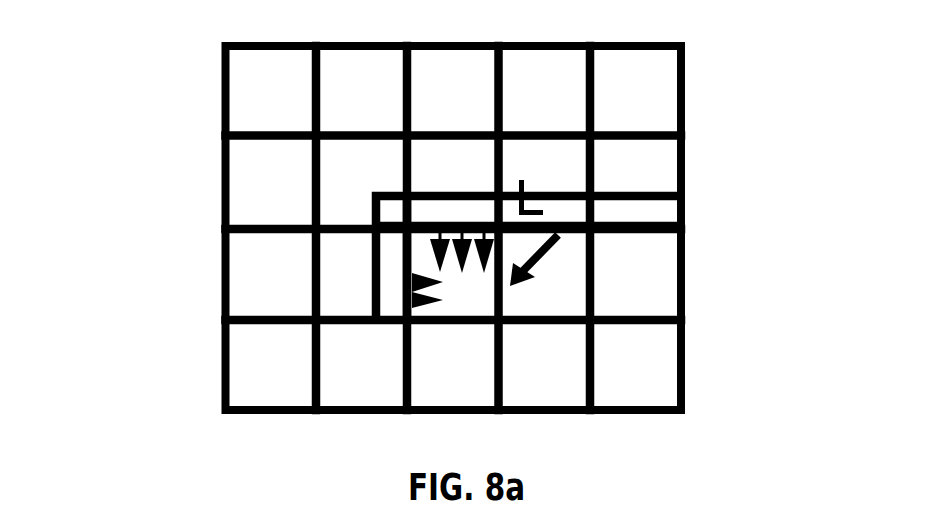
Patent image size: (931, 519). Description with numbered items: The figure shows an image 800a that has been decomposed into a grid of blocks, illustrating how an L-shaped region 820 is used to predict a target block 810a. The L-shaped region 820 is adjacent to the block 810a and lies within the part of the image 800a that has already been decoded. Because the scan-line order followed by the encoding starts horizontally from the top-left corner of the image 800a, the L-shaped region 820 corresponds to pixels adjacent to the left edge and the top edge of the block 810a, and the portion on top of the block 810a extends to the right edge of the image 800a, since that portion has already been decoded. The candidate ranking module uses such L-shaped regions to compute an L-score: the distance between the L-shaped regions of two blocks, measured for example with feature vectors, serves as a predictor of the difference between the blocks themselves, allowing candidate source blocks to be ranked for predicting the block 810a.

The image 800a is at (221, 56).
The L-shaped region 820 is at (561, 205).
The block 810a is at (490, 287).